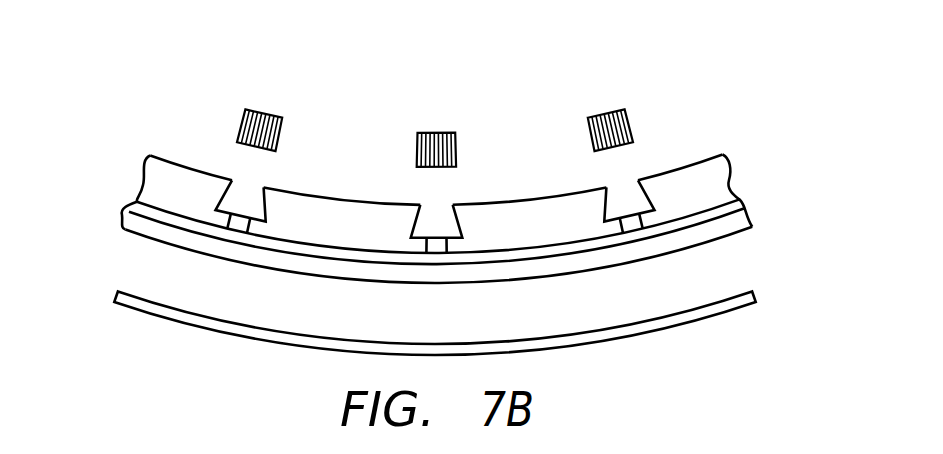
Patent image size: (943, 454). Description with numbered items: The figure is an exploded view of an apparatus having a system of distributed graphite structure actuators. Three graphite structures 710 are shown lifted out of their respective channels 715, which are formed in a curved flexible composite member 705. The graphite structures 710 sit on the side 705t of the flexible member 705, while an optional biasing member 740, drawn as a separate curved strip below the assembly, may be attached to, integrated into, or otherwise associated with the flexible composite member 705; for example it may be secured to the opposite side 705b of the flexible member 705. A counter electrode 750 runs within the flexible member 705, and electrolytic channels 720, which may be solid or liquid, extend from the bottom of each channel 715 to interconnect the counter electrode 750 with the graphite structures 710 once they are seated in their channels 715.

The flexible composite member 705 is at (163, 188).
The side containing the graphite structures 705t is at (708, 158).
The side of the flexible member 705b is at (729, 238).
The graphite structures 710 is at (268, 110).
The channels 715 is at (243, 197).
The electrolytic channels 720 is at (249, 226).
The biasing member 740 is at (722, 314).
The counter electrode 750 is at (718, 215).